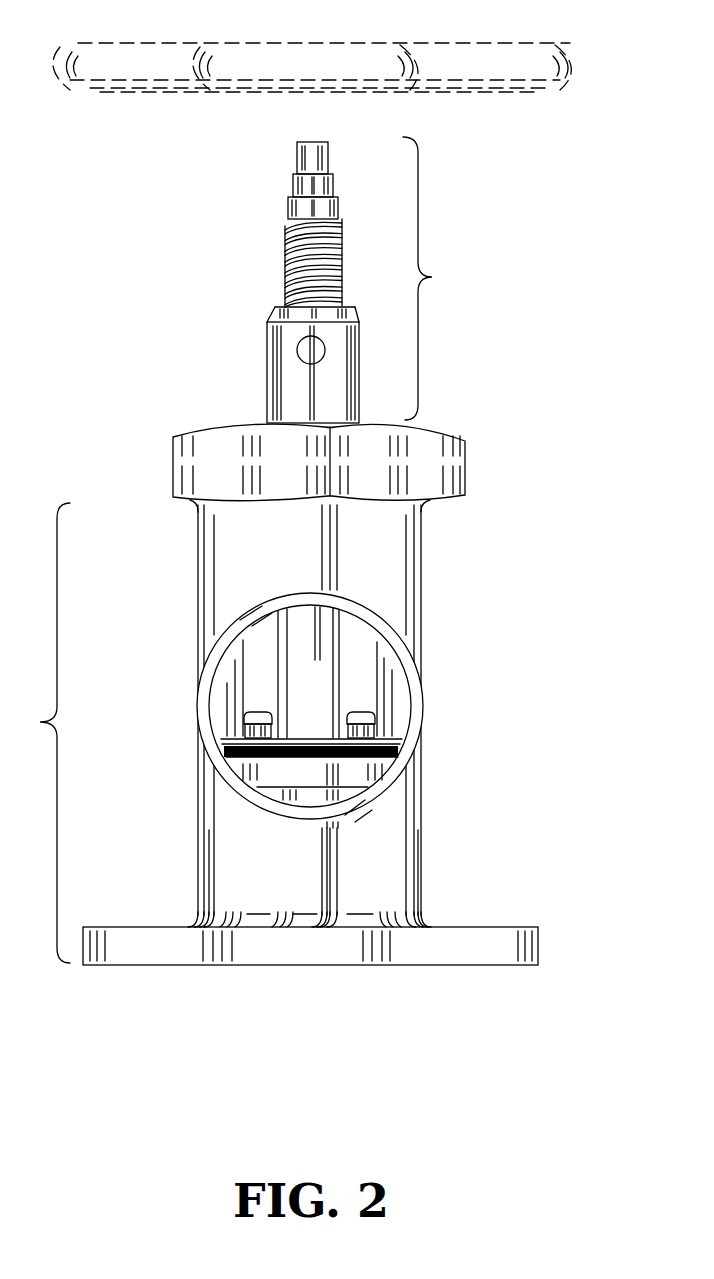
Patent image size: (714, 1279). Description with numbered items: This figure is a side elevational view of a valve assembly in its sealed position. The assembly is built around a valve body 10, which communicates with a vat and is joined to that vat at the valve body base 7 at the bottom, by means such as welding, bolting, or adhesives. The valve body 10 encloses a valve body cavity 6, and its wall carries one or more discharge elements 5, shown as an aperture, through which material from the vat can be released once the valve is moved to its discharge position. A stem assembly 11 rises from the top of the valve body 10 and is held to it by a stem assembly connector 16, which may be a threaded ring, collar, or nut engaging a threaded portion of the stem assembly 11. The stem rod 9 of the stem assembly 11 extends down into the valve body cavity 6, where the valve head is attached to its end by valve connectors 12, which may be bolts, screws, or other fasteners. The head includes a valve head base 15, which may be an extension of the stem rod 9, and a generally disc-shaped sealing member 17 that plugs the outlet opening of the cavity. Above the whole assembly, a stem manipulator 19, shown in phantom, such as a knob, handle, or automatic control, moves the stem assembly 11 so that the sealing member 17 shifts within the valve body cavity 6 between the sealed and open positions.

The stem manipulator 19 is at (168, 38).
The stem assembly 11 is at (371, 280).
The stem assembly connector 16 is at (465, 462).
The valve body 10 is at (215, 733).
The valve body base 7 is at (530, 943).
The discharge element 5 is at (390, 635).
The valve body cavity 6 is at (390, 663).
The stem rod 9 is at (333, 698).
The valve connectors 12 is at (375, 728).
The valve head base 15 is at (397, 753).
The sealing member 17 is at (355, 778).